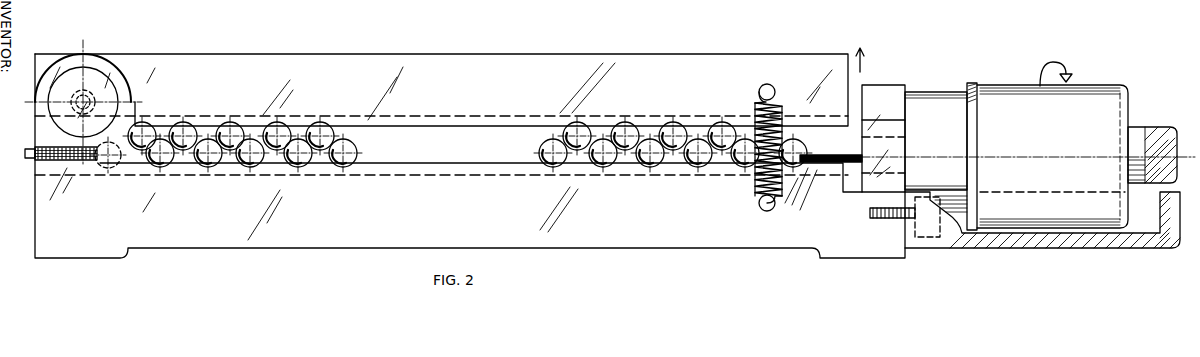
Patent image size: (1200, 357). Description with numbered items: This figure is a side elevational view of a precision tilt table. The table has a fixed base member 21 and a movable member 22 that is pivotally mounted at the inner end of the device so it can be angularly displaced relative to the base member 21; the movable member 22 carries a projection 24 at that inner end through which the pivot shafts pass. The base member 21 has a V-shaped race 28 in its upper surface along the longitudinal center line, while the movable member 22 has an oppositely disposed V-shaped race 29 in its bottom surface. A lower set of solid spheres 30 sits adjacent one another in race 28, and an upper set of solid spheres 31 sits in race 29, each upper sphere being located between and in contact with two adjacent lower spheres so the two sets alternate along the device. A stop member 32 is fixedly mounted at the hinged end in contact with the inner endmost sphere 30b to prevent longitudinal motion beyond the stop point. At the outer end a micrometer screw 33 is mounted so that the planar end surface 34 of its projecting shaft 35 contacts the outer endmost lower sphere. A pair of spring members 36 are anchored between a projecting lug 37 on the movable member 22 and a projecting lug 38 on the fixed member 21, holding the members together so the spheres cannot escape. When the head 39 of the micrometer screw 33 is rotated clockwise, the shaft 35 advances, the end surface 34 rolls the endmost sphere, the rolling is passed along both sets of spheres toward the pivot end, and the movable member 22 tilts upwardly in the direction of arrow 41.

The fixed base member 21 is at (477, 210).
The movable member 22 is at (478, 91).
The projection 24 is at (130, 62).
The V-shaped race 28 is at (538, 176).
The V-shaped race 29 is at (521, 116).
The solid spheres 30 is at (652, 168).
The inner endmost sphere 30b is at (113, 168).
The solid spheres 31 is at (720, 122).
The stop member 32 is at (65, 163).
The micrometer screw 33 is at (1080, 80).
The planar end surface 34 is at (832, 150).
The projecting shaft 35 is at (828, 155).
The spring members 36 is at (757, 188).
The projecting lug 37 is at (773, 88).
The projecting lug 38 is at (818, 180).
The head 39 is at (1059, 143).
The arrow 41 is at (866, 62).